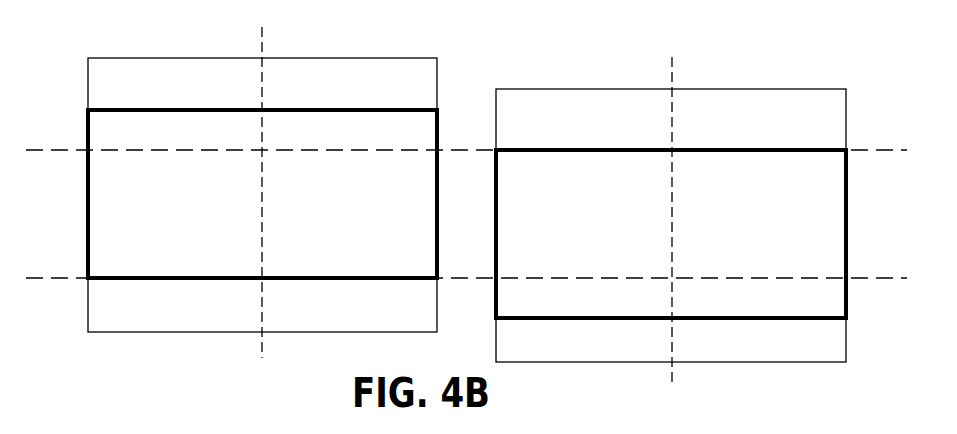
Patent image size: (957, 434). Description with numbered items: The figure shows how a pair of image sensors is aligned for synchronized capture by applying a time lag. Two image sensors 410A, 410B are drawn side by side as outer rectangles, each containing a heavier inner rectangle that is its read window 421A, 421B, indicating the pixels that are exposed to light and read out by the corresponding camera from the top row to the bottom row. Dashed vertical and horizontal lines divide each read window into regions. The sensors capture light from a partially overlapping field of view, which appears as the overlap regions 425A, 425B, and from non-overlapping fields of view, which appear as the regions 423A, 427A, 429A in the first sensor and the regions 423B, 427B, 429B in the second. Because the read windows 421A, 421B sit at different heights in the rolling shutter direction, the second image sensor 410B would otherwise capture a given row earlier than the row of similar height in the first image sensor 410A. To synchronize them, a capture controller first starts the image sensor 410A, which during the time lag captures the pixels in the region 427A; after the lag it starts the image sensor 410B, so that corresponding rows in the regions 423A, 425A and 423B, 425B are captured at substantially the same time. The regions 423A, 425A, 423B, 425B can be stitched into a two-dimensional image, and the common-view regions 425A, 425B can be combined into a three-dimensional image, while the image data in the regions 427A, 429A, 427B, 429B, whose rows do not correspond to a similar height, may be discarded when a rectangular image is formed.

The image sensor 410A is at (159, 58).
The read window 421A is at (102, 108).
The non-overlapping region 423A is at (202, 220).
The overlap region 425A is at (369, 220).
The non-overlapping region 427A is at (202, 142).
The non-overlapping region 429A is at (369, 142).
The image sensor 410B is at (569, 89).
The read window 421B is at (827, 113).
The non-overlapping region 423B is at (788, 221).
The overlap region 425B is at (611, 221).
The non-overlapping region 427B is at (788, 310).
The non-overlapping region 429B is at (611, 310).